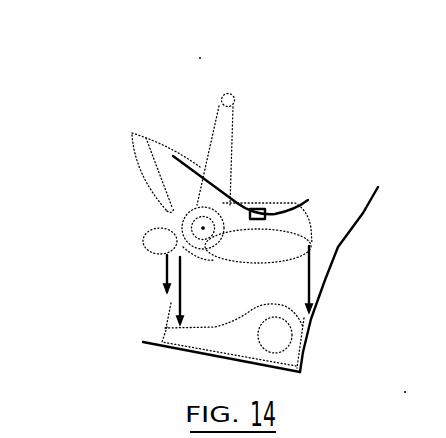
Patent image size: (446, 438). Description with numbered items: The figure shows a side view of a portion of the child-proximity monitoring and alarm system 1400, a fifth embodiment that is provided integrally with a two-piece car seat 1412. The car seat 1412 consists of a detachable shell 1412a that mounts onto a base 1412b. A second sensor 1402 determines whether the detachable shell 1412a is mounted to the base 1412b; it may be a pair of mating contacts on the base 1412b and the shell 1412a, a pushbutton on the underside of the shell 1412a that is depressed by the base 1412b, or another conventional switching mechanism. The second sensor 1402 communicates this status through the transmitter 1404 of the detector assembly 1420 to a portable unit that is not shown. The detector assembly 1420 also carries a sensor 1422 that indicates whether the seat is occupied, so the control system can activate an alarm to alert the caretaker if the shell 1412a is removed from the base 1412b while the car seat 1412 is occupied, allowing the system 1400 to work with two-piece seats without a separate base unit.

The child-proximity monitoring and alarm system 1400 is at (283, 82).
The car seat 1412 is at (140, 132).
The detachable shell 1412a is at (132, 140).
The base 1412b is at (163, 339).
The sensor 1422 is at (196, 168).
The transmitter 1404 is at (268, 215).
The detector assembly 1420 is at (243, 193).
The second sensor 1402 is at (197, 256).